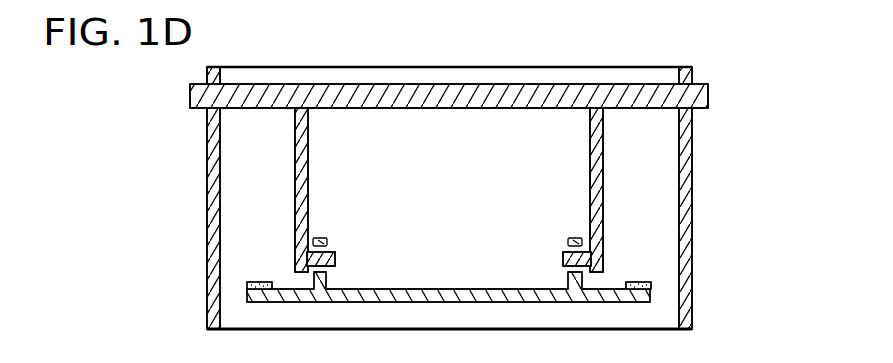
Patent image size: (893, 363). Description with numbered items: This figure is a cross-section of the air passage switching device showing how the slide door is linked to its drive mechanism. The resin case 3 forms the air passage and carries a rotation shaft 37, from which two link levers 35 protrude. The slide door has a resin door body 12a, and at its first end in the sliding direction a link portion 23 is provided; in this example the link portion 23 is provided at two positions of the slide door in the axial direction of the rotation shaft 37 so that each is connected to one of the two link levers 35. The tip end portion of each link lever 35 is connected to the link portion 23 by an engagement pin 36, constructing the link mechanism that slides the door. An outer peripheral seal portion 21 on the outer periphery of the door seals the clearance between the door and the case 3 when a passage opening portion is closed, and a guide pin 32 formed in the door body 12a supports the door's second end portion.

The case 3 is at (692, 207).
The guide pin 32 is at (449, 33).
The rotation shaft 37 is at (708, 93).
The link lever 35 is at (308, 160).
The engagement pin 36 is at (336, 262).
The link portion 23 is at (328, 243).
The door body 12a is at (420, 292).
The outer peripheral seal portion 21 is at (257, 281).